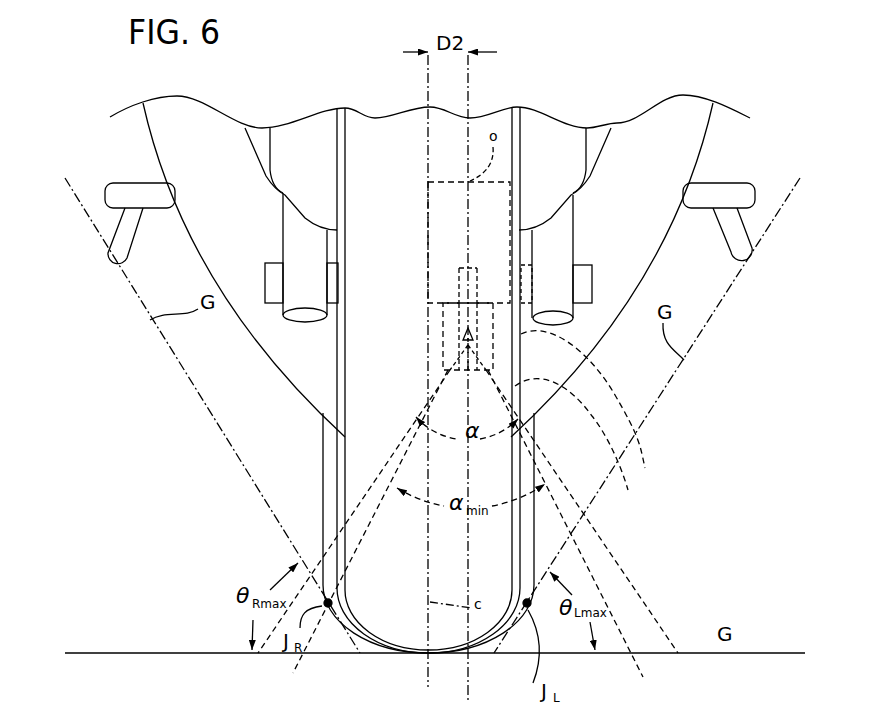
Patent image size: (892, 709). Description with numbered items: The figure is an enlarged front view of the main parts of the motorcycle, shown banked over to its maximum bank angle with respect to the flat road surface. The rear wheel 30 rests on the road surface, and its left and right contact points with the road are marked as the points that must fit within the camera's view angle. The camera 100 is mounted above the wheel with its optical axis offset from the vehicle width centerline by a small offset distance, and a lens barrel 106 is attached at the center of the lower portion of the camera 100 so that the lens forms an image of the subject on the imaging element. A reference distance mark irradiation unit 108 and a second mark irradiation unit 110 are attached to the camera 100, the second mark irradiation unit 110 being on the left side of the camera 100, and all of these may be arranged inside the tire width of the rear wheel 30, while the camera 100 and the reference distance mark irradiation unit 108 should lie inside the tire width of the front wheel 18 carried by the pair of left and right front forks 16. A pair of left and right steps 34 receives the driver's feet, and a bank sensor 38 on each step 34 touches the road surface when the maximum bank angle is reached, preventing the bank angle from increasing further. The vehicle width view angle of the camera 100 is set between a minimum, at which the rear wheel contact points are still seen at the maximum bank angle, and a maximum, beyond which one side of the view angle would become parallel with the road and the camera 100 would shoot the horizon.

The front fork 16 is at (338, 294).
The front wheel 18 is at (340, 483).
The rear wheel 30 is at (330, 521).
The step 34 is at (722, 190).
The bank sensor 38 is at (748, 253).
The camera 100 is at (428, 182).
The lens barrel 106 is at (440, 347).
The reference distance mark irradiation unit 108 is at (606, 433).
The second mark irradiation unit 110 is at (643, 421).